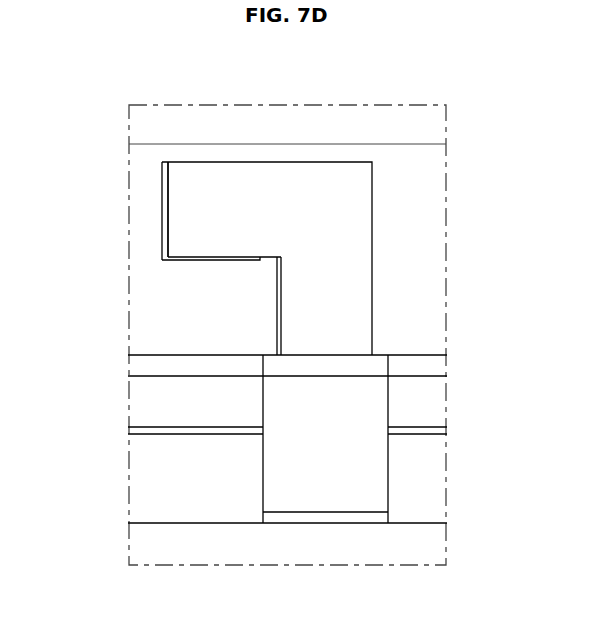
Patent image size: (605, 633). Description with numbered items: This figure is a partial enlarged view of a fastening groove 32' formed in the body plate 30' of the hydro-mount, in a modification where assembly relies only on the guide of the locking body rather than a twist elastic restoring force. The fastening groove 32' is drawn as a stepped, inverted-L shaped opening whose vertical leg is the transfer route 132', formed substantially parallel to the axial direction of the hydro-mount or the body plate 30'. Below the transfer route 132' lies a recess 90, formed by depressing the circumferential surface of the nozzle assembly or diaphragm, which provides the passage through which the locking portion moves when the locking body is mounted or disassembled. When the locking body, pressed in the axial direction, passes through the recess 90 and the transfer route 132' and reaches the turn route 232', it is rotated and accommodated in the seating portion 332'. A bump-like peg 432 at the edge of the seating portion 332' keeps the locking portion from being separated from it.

The body plate 30' is at (327, 335).
The fastening groove 32' is at (282, 210).
The turn route 232' is at (267, 161).
The seating portion 332' is at (111, 211).
The transfer route 132' is at (411, 306).
The peg 432 is at (270, 262).
The recess 90 is at (325, 468).